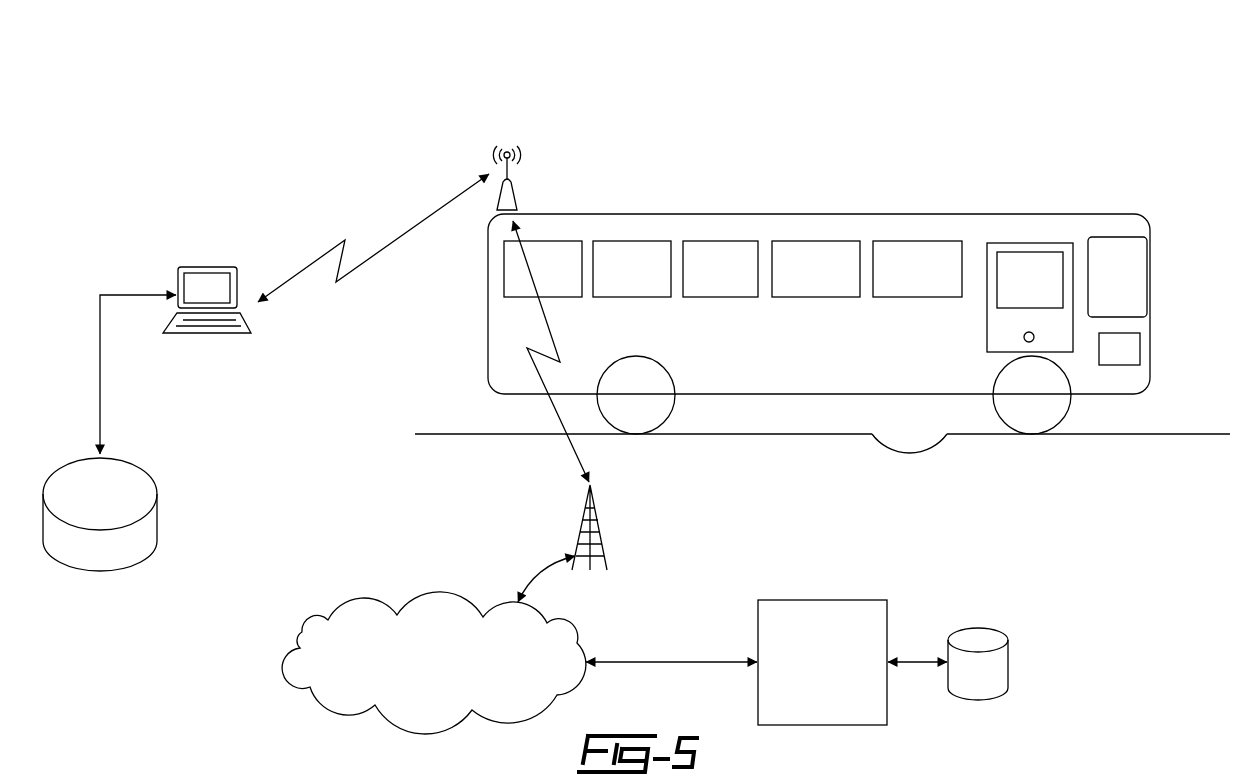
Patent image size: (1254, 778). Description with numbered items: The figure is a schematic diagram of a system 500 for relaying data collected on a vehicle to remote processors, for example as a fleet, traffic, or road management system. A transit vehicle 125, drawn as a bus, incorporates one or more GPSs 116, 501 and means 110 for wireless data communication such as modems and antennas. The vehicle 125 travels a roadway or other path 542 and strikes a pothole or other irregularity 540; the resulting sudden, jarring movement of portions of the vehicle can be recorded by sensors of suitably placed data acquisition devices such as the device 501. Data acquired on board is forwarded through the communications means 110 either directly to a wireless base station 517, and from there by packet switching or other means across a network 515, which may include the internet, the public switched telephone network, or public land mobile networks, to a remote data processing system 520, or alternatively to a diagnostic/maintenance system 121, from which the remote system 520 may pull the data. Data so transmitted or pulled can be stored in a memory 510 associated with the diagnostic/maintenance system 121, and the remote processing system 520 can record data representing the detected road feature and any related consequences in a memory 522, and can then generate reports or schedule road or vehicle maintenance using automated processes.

The system 500 is at (868, 272).
The means for wireless data communication 110 is at (476, 162).
The transit vehicle 125 is at (468, 337).
The diagnostic/maintenance system 121 is at (249, 265).
The remote data processing system 520 is at (798, 672).
The memory 510 is at (76, 503).
The GPS / data acquisition device 501 is at (1145, 350).
The GPS 116 is at (1034, 339).
The roadway or other path 542 is at (1162, 434).
The pothole or other irregularity 540 is at (932, 453).
The wireless base station 517 is at (603, 548).
The network 515 is at (460, 670).
The memory 522 is at (953, 682).